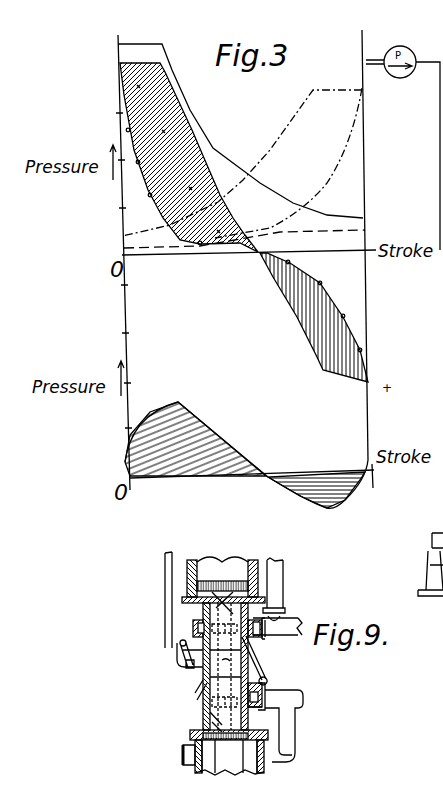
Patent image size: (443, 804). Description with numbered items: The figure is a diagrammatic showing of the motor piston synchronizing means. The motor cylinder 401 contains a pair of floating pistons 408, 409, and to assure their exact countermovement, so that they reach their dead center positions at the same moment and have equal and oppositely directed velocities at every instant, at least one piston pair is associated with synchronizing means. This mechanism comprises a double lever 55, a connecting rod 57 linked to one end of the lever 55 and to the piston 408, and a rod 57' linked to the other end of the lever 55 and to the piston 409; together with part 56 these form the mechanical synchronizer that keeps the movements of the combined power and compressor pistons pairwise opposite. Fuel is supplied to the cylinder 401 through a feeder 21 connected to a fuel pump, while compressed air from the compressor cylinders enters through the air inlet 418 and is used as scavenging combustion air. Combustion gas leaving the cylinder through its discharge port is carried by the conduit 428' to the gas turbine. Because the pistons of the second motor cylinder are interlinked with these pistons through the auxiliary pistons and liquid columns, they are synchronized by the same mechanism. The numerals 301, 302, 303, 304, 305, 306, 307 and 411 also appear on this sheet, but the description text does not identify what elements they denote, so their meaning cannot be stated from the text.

In FIG. 3, the pressure curve 301 is at (240, 131).
In FIG. 3, the pressure curve 302 is at (340, 162).
In FIG. 3, the pressure curve 303 is at (295, 132).
In FIG. 3, the pressure curve 304 is at (244, 229).
In FIG. 3, the hatched pressure area 305 is at (200, 175).
In FIG. 3, the hatched pressure area 306 is at (252, 250).
In FIG. 3, the resultant pressure curve 307 is at (226, 442).
In FIG. 9, the feeder 21 is at (203, 662).
In FIG. 9, the double lever 55 is at (262, 680).
In FIG. 9, the synchronizer part 56 is at (203, 688).
In FIG. 9, the connecting rod 57 is at (273, 621).
In FIG. 9, the connecting rod 57' is at (186, 725).
In FIG. 9, the motor cylinder 401 is at (203, 612).
In FIG. 9, the floating piston 408 is at (235, 592).
In FIG. 9, the floating piston 409 is at (225, 666).
In FIG. 9, the cap 411 is at (187, 575).
In FIG. 9, the air inlet 418 is at (197, 628).
In FIG. 9, the conduit 428' is at (320, 726).